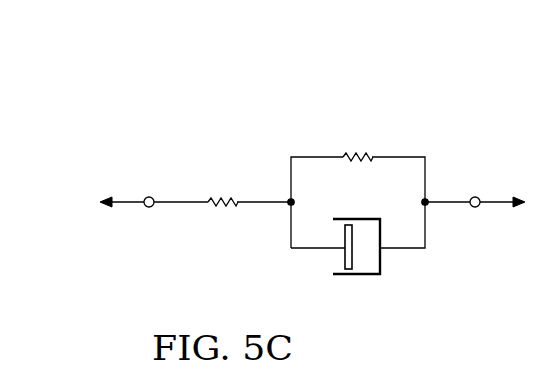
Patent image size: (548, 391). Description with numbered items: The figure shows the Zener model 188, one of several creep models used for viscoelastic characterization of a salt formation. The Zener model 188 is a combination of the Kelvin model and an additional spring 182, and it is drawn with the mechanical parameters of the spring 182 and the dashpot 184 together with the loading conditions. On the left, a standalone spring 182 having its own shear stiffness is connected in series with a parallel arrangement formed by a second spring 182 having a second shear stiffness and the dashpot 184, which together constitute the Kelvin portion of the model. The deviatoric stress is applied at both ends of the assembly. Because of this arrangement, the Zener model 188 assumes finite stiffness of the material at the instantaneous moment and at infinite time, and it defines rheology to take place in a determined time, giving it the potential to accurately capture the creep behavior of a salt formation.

The Zener model 188 is at (258, 80).
The spring 182 is at (372, 125).
The dashpot 184 is at (358, 276).